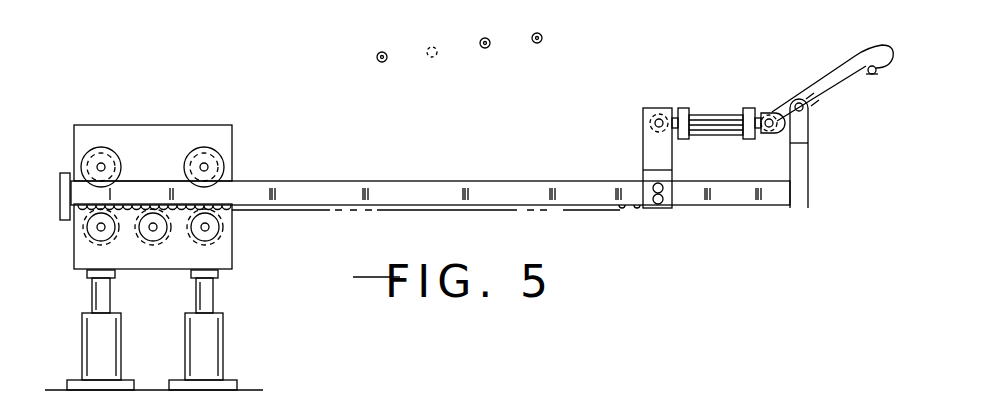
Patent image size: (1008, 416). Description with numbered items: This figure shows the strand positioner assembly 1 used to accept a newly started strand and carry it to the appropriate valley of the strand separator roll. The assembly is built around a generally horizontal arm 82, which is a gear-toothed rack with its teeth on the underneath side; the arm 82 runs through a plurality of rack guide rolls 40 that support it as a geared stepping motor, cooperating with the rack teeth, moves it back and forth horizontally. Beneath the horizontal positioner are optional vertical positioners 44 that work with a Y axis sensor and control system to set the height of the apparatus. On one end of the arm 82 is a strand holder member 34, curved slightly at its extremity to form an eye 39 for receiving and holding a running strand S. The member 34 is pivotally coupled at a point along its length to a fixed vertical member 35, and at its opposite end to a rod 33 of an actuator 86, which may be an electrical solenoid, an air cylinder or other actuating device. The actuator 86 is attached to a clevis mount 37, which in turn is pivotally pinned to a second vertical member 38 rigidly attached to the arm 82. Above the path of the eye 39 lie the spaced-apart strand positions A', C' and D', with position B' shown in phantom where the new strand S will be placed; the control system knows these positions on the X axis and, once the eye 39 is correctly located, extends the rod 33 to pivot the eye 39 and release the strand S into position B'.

The wire feeding and straightening apparatus frame 1 is at (143, 108).
The rack guide rolls 40 is at (100, 147).
The vertical positioner 44 is at (120, 353).
The arm 82 is at (388, 180).
The second vertical member 38 is at (643, 147).
The clevis mount 37 is at (658, 110).
The actuating cylinder 86 is at (705, 108).
The rod 33 is at (763, 113).
The strand holder member 34 is at (828, 73).
The eye 39 is at (884, 53).
The fixed vertical member 35 is at (810, 163).
The strand S is at (875, 80).
The strand position A' is at (382, 75).
The strand position B' is at (434, 71).
The strand position C' is at (489, 64).
The strand position D' is at (545, 59).